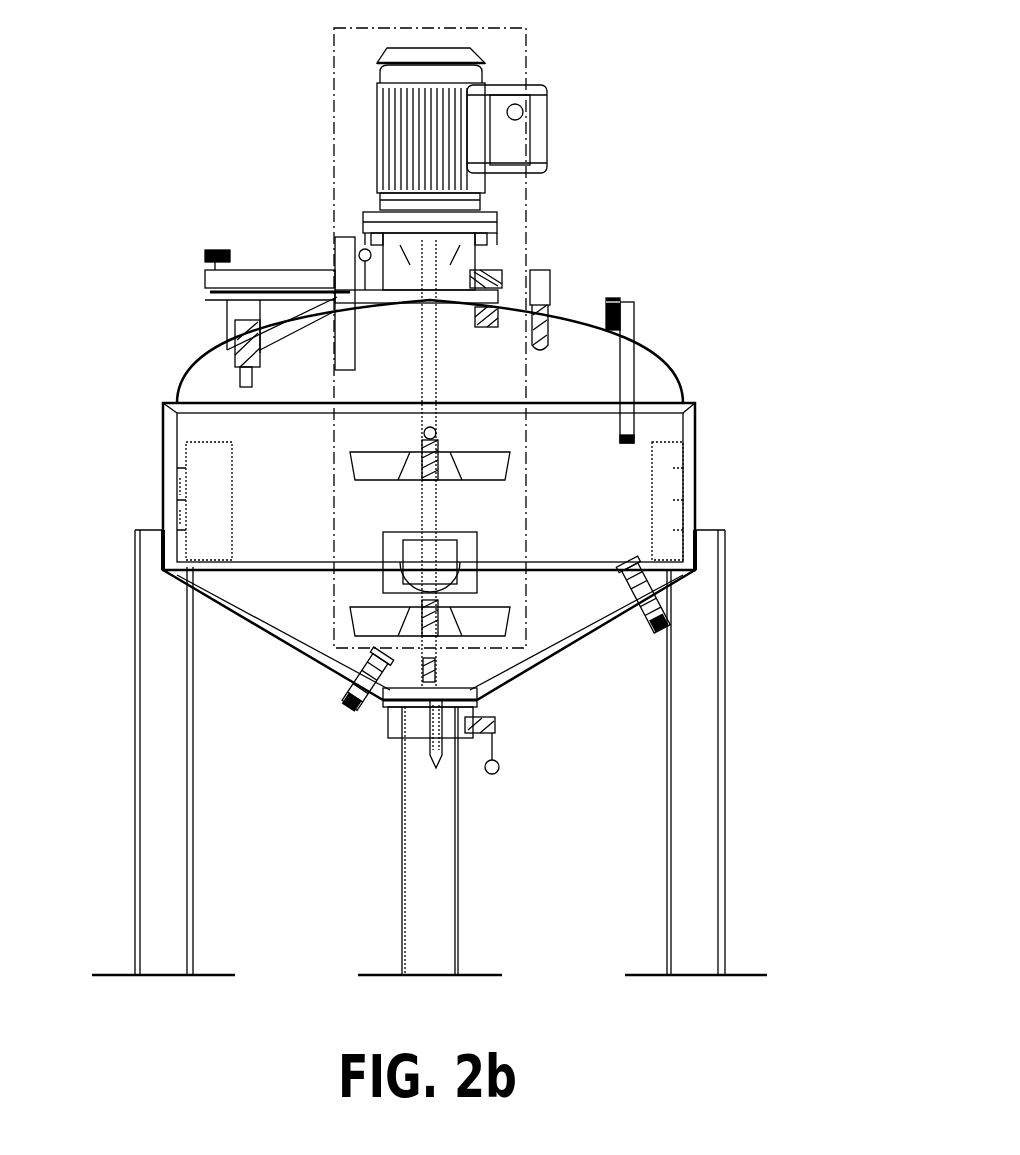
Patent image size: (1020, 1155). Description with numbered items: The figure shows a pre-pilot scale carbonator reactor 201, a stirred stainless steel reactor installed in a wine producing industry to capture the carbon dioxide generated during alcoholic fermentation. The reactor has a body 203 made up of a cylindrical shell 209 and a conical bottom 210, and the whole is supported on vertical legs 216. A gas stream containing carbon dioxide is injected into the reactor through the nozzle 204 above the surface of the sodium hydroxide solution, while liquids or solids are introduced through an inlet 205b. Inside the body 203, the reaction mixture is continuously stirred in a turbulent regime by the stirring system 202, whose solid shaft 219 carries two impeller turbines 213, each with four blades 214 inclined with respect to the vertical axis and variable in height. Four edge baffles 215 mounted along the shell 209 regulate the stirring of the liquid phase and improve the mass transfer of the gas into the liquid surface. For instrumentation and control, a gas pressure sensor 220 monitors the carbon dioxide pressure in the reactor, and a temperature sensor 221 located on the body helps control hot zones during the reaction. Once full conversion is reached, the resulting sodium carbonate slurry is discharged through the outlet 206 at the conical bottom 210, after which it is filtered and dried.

The carbonator reactor 201 is at (253, 160).
The stirring system 202 is at (527, 68).
The solid shaft 219 is at (383, 210).
The nozzle 204 is at (340, 240).
The gas pressure sensor 220 is at (553, 275).
The inlet 205b is at (633, 303).
The cylindrical shell 209 is at (167, 417).
The body 203 is at (580, 498).
The baffle 215 is at (210, 500).
The impeller turbine 213 is at (445, 467).
The blade 214 is at (487, 478).
The conical bottom 210 is at (273, 640).
The outlet 206 is at (390, 708).
The temperature sensor 221 is at (652, 628).
The vertical legs 216 is at (165, 872).